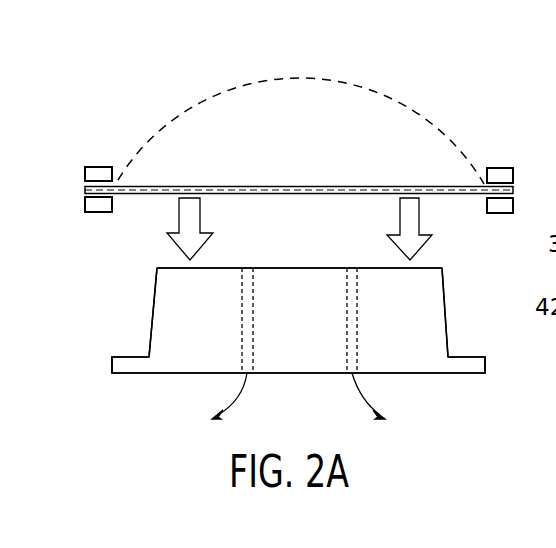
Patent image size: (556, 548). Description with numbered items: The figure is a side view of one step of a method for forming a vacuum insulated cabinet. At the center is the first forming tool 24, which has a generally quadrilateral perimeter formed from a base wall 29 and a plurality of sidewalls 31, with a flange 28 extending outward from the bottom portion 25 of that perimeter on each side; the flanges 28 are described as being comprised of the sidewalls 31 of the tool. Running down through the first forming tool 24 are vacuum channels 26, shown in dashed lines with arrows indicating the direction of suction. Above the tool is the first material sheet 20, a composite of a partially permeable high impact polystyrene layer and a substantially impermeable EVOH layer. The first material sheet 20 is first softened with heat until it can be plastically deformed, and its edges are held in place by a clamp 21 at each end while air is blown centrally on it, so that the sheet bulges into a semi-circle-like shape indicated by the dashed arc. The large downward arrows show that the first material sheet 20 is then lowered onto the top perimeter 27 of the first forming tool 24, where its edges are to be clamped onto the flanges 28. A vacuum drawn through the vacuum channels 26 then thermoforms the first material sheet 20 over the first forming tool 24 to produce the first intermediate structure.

The first material sheet 20 is at (451, 187).
The clamp 21 is at (502, 173).
The first forming tool 24 is at (418, 355).
The bottom portion 25 is at (172, 362).
The vacuum channel 26 is at (347, 373).
The top perimeter 27 is at (423, 268).
The flange 28 is at (132, 363).
The base wall 29 is at (178, 268).
The sidewalls 31 is at (445, 303).